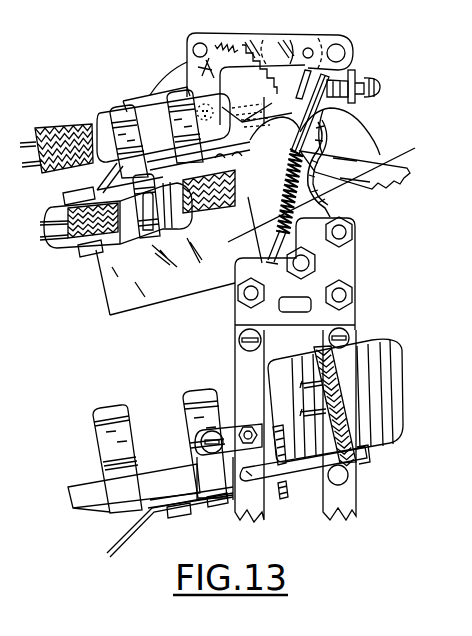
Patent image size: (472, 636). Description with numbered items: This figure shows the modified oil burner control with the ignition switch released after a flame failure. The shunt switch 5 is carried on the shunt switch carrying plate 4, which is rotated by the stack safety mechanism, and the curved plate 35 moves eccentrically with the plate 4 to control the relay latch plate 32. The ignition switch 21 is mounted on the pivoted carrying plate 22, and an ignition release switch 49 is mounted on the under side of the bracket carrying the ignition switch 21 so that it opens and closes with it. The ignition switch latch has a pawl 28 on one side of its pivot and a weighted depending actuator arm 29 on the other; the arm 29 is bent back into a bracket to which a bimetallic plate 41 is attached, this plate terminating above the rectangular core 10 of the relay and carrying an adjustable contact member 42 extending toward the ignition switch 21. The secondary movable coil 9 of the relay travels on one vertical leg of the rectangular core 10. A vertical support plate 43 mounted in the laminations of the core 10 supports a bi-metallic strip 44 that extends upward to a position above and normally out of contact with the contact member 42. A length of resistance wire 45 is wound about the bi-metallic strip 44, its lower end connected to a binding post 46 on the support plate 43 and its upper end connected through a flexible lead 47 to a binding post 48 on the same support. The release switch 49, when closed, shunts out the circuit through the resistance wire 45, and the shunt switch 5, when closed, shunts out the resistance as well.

The shunt switch carrying plate 4 is at (108, 314).
The shunt switch 5 is at (52, 208).
The secondary movable coil 9 is at (376, 395).
The rectangular core 10 is at (347, 489).
The ignition switch 21 is at (100, 126).
The carrying plate 22 is at (238, 83).
The pawl 28 is at (292, 93).
The depending actuator arm 29 is at (354, 72).
The relay latch plate 32 is at (404, 154).
The curved plate 35 is at (343, 130).
The bimetallic plate 41 is at (356, 75).
The adjustable contact member 42 is at (380, 91).
The vertical support plate 43 is at (339, 257).
The bi-metallic strip 44 is at (290, 163).
The resistance wire 45 is at (240, 238).
The binding post 46 is at (318, 268).
The flexible lead 47 is at (320, 172).
The binding post 48 is at (357, 226).
The ignition release switch 49 is at (130, 245).